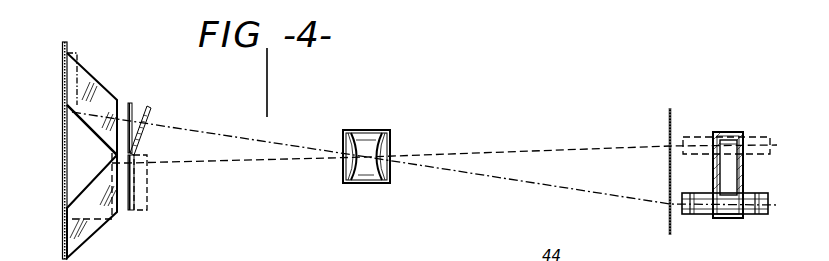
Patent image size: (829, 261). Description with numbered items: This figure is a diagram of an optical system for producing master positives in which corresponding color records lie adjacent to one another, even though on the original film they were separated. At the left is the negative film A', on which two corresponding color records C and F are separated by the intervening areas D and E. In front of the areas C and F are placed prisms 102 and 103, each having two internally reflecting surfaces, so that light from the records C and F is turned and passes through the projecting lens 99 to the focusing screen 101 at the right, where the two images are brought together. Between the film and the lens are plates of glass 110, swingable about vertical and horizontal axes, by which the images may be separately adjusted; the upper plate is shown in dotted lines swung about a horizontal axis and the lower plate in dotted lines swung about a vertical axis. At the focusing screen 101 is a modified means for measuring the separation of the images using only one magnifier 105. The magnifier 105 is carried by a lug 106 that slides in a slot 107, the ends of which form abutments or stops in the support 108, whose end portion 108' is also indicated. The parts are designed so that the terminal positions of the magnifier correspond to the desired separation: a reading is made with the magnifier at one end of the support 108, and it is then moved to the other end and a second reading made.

The projecting lens 99 is at (369, 139).
The focusing screen 101 is at (668, 118).
The prism 102 is at (99, 91).
The prism 103 is at (100, 224).
The magnifier 105 is at (770, 121).
The lug 106 is at (724, 215).
The slot 107 is at (743, 178).
The support 108 is at (723, 163).
The sleeve end 108' is at (719, 237).
The plates of glass 110 is at (132, 110).
The negative film A' is at (78, 139).
The color record C is at (46, 78).
The intervening area D is at (46, 128).
The intervening area E is at (48, 178).
The color record F is at (50, 229).